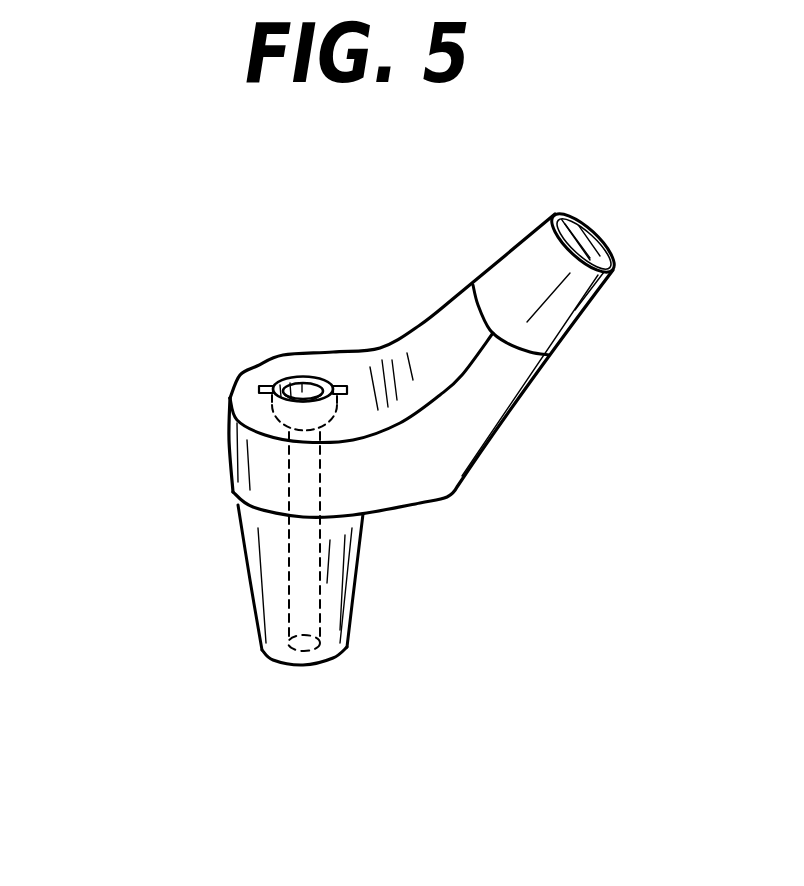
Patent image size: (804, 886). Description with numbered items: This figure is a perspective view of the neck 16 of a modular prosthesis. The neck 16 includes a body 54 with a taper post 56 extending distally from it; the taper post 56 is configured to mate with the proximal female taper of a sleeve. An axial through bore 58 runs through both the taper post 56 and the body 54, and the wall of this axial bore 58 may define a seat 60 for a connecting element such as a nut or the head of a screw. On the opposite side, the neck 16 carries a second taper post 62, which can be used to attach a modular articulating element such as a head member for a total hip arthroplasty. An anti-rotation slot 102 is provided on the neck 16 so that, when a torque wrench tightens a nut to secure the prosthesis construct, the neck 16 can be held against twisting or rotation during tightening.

The neck 16 is at (170, 284).
The body 54 is at (230, 417).
The taper post 56 is at (357, 582).
The axial through bore 58 is at (288, 477).
The seat 60 is at (225, 386).
The second taper post 62 is at (497, 260).
The anti-rotation slot 102 is at (264, 386).